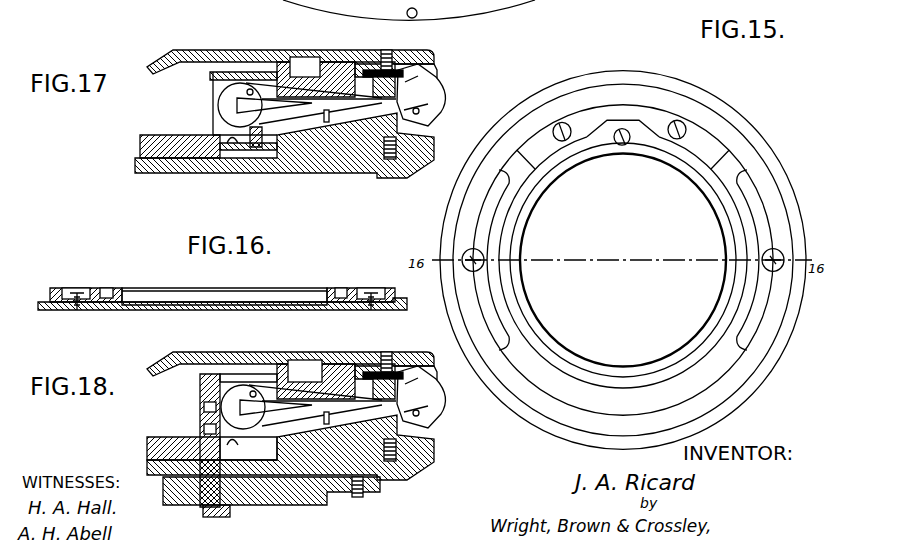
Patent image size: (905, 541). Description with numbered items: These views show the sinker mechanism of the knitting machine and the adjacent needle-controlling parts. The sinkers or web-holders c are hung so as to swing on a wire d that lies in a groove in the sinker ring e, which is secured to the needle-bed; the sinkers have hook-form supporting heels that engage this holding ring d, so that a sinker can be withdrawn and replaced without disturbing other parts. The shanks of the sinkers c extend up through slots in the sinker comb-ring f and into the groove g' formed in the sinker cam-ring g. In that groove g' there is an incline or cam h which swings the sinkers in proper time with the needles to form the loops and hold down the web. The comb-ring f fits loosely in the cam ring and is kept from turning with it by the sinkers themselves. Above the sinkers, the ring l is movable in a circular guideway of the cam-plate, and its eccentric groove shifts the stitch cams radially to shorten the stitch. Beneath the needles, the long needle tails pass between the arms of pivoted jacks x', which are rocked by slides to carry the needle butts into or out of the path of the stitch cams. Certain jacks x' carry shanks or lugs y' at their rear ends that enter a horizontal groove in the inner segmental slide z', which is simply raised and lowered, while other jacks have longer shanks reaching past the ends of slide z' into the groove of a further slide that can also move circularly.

In FIG. 15, the groove g' is at (623, 260).
In FIG. 15, the spring plate s is at (568, 150).
In FIG. 15, the incline or cam h is at (612, 133).
In FIG. 17, the sinker cam-ring g is at (311, 61).
In FIG. 17, the ring l is at (338, 56).
In FIG. 18, the ring l is at (287, 362).
In FIG. 17, the sinker comb-ring f is at (420, 54).
In FIG. 17, the sinkers or web-holders c is at (420, 95).
In FIG. 18, the sinkers or web-holders c is at (420, 397).
In FIG. 17, the wire d is at (421, 109).
In FIG. 18, the wire d is at (442, 446).
In FIG. 17, the sinker ring e is at (436, 140).
In FIG. 18, the sinker ring e is at (309, 405).
In FIG. 17, the pivoted jacks x' is at (284, 115).
In FIG. 18, the pivoted jacks x' is at (301, 410).
In FIG. 18, the shanks or lugs y' is at (186, 412).
In FIG. 18, the inner segmental slide z' is at (193, 429).